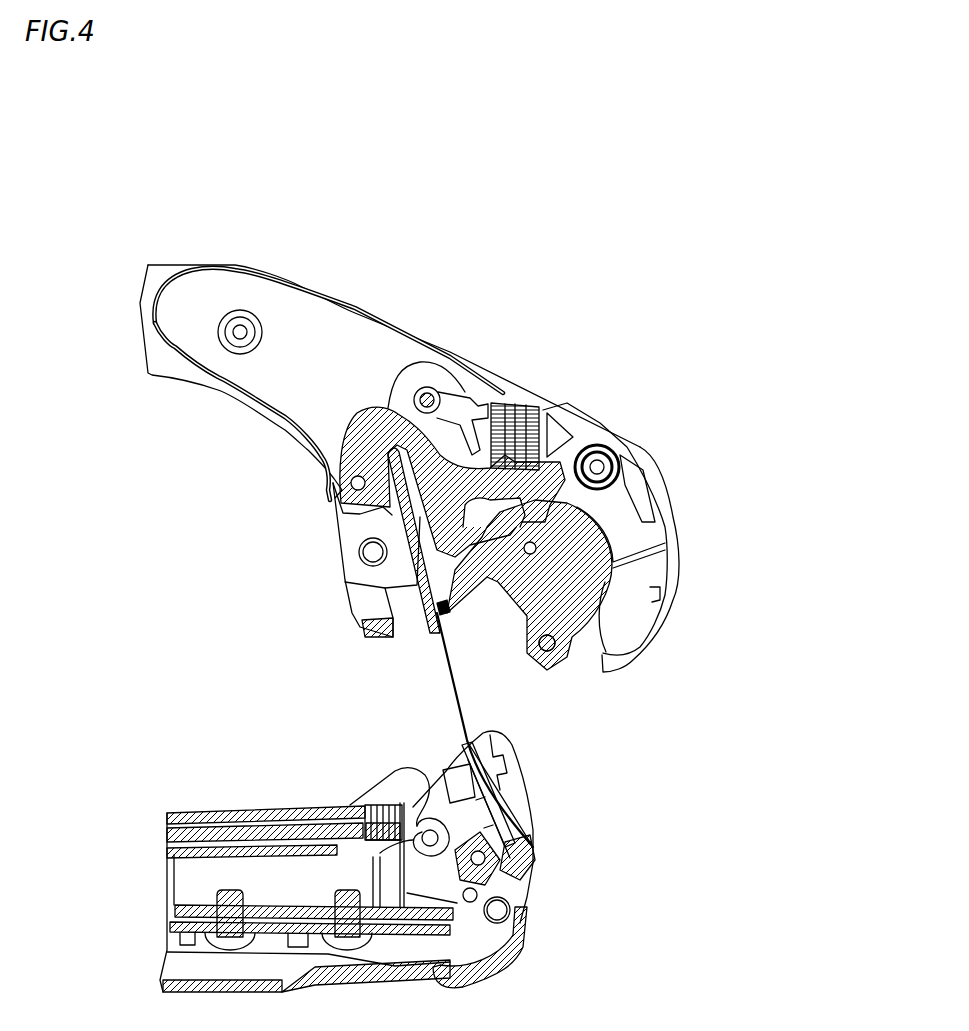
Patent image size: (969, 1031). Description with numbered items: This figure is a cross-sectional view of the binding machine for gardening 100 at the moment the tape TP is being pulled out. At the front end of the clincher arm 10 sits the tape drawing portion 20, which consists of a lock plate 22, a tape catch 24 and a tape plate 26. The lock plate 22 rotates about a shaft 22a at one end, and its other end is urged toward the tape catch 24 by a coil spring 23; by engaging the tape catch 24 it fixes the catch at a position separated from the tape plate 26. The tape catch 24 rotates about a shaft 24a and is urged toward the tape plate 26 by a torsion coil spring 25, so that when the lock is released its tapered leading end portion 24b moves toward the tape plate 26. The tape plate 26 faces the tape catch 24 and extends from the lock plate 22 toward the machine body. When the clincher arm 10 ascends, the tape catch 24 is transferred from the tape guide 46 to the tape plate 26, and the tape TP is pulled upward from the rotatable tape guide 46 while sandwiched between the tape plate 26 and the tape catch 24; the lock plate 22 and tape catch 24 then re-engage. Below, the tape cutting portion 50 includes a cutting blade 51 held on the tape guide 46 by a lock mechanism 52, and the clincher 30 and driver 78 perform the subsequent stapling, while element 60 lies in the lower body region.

The binding machine for gardening 100 is at (607, 262).
The clincher arm 10 is at (288, 289).
The tape drawing portion 20 is at (672, 511).
The lock plate 22 is at (400, 427).
The shaft 22a is at (332, 490).
The coil spring 23 is at (513, 402).
The tape catch 24 is at (600, 597).
The shaft 24a is at (575, 665).
The leading end portion 24b is at (447, 607).
The torsion coil spring 25 is at (610, 443).
The tape plate 26 is at (427, 627).
The clincher 30 is at (360, 622).
The tape TP is at (468, 700).
The tape guide 46 is at (492, 753).
The tape cutting portion 50 is at (534, 818).
The cutting blade 51 is at (437, 827).
The lock mechanism 52 is at (540, 853).
The hydraulic unit 60 is at (250, 800).
The driver 78 is at (523, 953).